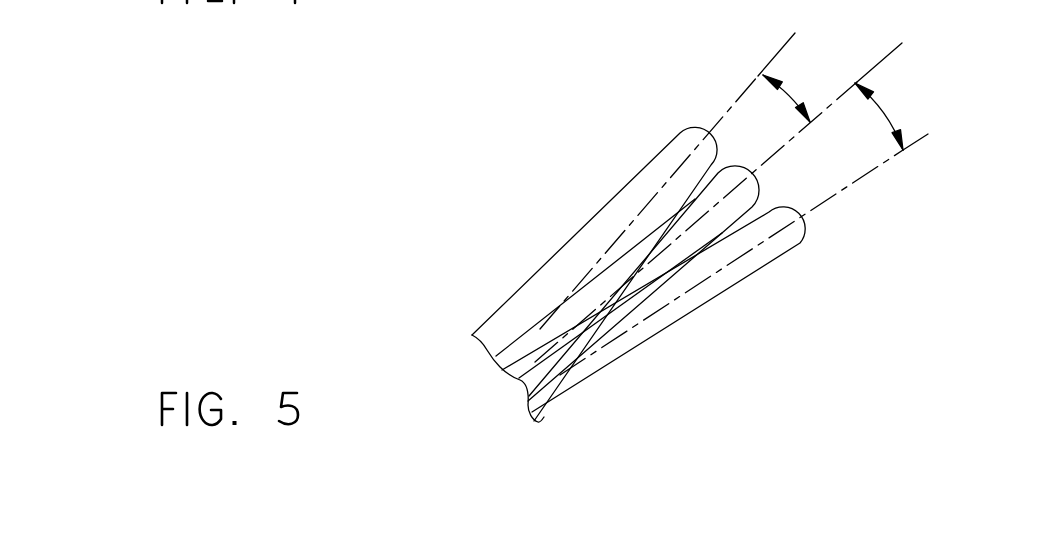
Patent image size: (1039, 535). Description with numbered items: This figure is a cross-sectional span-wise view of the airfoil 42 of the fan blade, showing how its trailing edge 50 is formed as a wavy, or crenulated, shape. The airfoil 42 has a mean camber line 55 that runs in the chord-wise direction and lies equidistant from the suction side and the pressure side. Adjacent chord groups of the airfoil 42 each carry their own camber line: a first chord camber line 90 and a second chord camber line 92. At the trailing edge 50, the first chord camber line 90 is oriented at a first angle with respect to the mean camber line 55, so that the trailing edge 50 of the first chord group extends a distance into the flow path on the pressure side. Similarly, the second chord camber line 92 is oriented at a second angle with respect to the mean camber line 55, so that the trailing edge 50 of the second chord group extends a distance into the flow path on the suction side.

The airfoil 42 is at (600, 248).
The trailing edge 50 is at (660, 113).
The mean camber line 55 is at (888, 54).
The first chord camber line 90 is at (915, 153).
The second chord camber line 92 is at (772, 56).